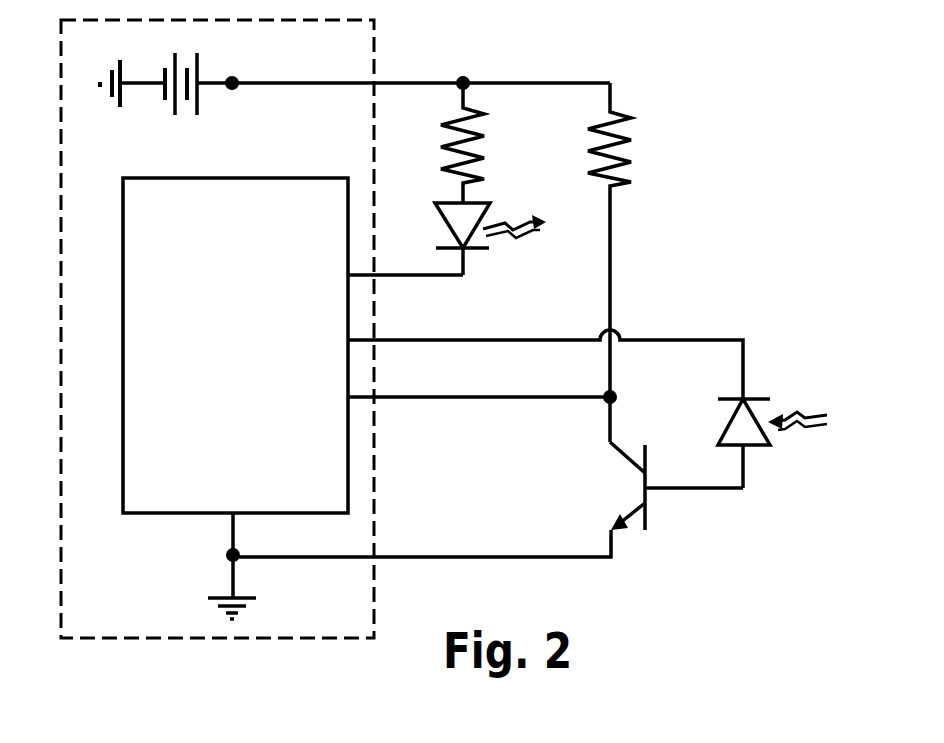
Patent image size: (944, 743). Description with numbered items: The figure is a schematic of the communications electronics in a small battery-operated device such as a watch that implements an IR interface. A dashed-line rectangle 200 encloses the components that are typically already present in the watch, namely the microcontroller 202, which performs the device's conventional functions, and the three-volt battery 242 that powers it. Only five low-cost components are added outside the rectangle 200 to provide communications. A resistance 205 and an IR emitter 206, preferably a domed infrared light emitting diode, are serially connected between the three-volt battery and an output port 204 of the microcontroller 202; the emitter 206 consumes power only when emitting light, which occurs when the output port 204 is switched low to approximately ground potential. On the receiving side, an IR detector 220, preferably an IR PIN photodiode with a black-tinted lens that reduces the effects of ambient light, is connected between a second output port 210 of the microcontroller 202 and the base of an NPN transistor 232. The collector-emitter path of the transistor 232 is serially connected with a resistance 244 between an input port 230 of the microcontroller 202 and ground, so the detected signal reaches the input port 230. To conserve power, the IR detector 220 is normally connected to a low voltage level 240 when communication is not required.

The dashed-line rectangle 200 is at (375, 60).
The microcontroller 202 is at (205, 178).
The output port 204 is at (350, 278).
The resistance 205 is at (440, 132).
The IR emitter 206 is at (490, 212).
The second output port 210 is at (350, 342).
The IR detector 220 is at (723, 430).
The input port 230 is at (350, 400).
The NPN transistor 232 is at (647, 512).
The low voltage level 240 is at (610, 548).
The battery 242 is at (233, 152).
The resistance 244 is at (623, 157).